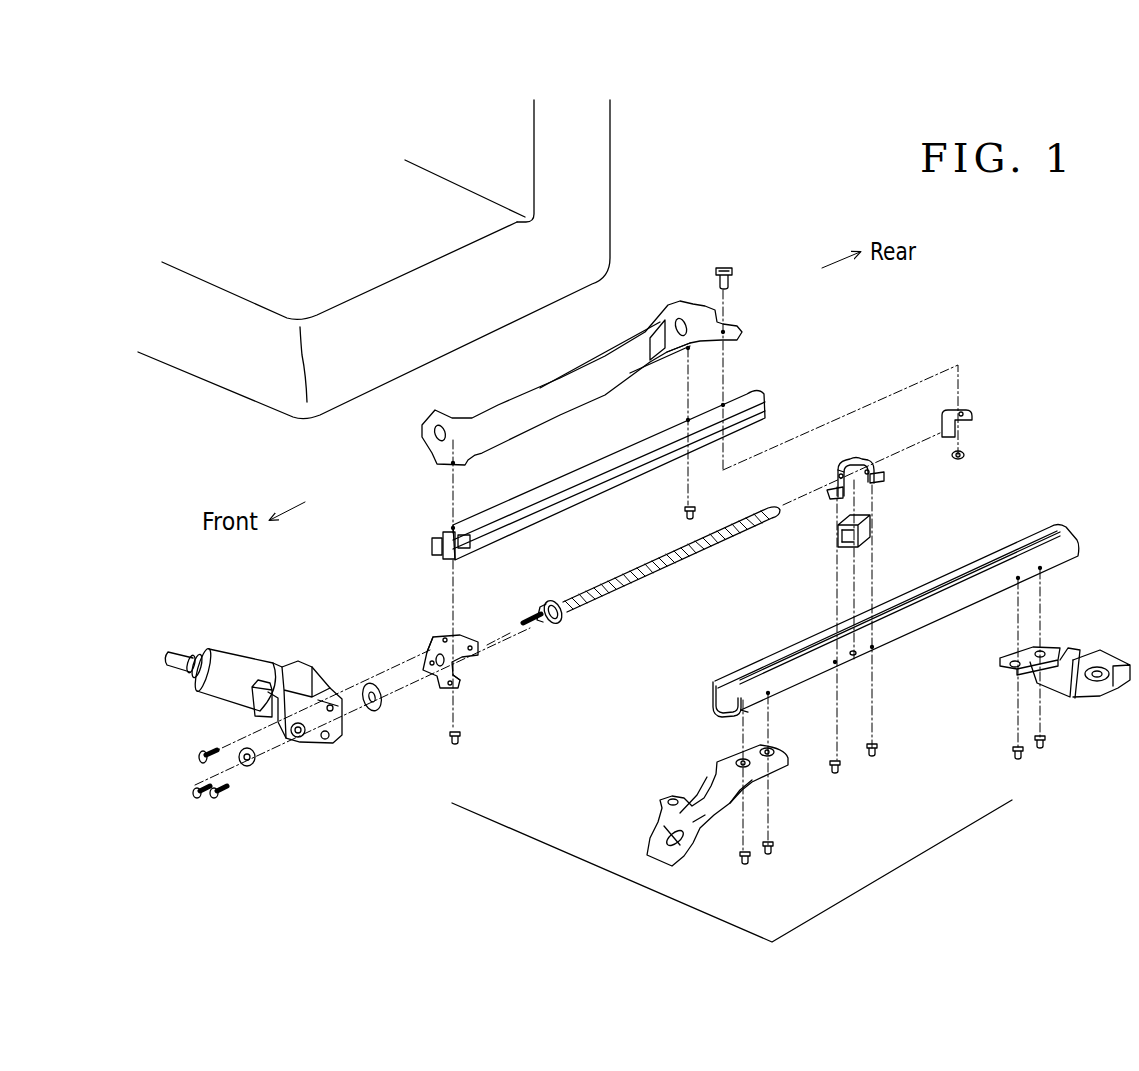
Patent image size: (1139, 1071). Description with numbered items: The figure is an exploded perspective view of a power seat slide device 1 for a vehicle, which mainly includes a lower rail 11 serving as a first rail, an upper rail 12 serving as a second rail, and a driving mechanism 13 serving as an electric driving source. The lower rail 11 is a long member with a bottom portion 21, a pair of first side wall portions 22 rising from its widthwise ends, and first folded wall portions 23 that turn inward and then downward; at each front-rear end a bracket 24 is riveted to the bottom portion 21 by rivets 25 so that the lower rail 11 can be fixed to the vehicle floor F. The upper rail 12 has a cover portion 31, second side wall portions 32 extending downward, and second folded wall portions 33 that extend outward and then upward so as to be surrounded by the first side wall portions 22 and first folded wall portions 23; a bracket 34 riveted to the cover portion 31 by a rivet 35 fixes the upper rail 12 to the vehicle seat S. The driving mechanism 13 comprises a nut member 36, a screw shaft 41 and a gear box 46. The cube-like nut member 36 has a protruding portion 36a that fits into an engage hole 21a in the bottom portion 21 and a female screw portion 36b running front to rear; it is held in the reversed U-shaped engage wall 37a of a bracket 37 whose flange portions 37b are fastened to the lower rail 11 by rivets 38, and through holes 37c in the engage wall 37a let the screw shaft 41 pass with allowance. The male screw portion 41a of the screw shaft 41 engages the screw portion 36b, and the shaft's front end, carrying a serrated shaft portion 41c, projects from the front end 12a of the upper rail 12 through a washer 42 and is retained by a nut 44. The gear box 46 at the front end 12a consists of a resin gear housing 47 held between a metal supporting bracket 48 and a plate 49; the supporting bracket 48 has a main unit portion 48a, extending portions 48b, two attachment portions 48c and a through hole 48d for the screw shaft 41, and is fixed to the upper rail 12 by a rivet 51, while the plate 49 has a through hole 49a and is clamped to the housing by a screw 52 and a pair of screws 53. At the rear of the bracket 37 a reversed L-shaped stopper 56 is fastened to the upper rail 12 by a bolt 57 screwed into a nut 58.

The power seat slide device 1 is at (885, 347).
The vehicle seat S is at (575, 167).
The vehicle floor F is at (573, 855).
The lower rail 11 is at (884, 625).
The upper rail 12 is at (588, 464).
The front end 12a is at (443, 530).
The driving mechanism 13 is at (237, 646).
The bottom portion 21 is at (723, 718).
The engage hole 21a is at (854, 660).
The first side wall portion 22 is at (778, 687).
The first folded wall portion 23 is at (740, 690).
The bracket 24 is at (1080, 650).
The rivet 25 is at (1064, 748).
The cover portion 31 is at (525, 497).
The second side wall portion 32 is at (432, 540).
The second folded wall portion 33 is at (425, 552).
The bracket 34 is at (547, 387).
The rivet 35 is at (683, 508).
The nut member 36 is at (858, 543).
The protruding portion 36a is at (870, 545).
The screw portion 36b is at (838, 540).
The bracket 37 is at (848, 479).
The engage wall 37a is at (856, 447).
The flange portion 37b is at (830, 496).
The through hole 37c is at (838, 473).
The rivet 38 is at (890, 756).
The screw shaft 41 is at (487, 646).
The screw portion 41a is at (645, 565).
The serrated shaft portion 41c is at (535, 633).
The washer 42 is at (370, 686).
The nut 44 is at (255, 765).
The gear box 46 is at (327, 717).
The gear housing 47 is at (360, 710).
The supporting bracket 48 is at (444, 663).
The main unit portion 48a is at (432, 650).
The extending portion 48b is at (455, 680).
The attachment portion 48c is at (462, 660).
The through hole 48d is at (445, 685).
The plate 49 is at (298, 738).
The through hole 49a is at (329, 738).
The rivet 51 is at (460, 742).
The screw 52 is at (202, 752).
The screw 53 is at (213, 798).
The stopper 56 is at (942, 415).
The bolt 57 is at (732, 265).
The nut 58 is at (962, 460).